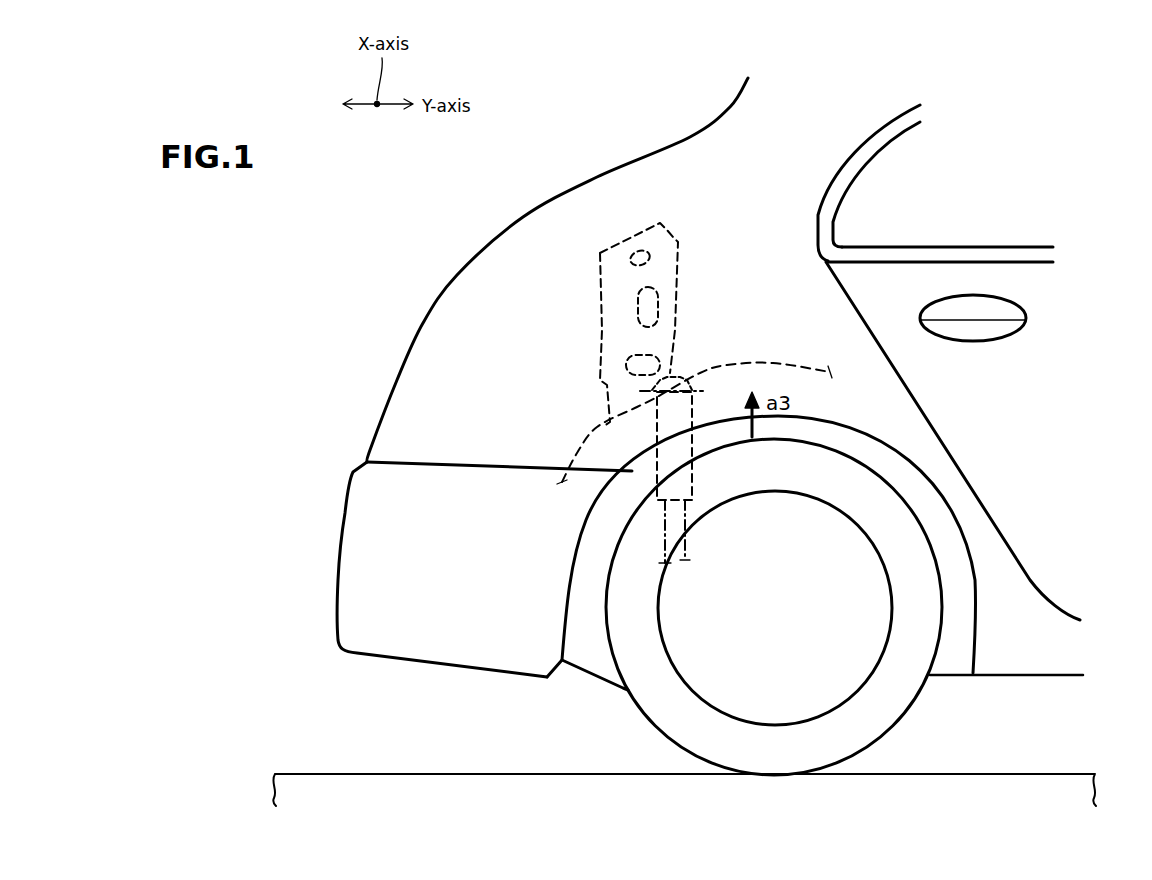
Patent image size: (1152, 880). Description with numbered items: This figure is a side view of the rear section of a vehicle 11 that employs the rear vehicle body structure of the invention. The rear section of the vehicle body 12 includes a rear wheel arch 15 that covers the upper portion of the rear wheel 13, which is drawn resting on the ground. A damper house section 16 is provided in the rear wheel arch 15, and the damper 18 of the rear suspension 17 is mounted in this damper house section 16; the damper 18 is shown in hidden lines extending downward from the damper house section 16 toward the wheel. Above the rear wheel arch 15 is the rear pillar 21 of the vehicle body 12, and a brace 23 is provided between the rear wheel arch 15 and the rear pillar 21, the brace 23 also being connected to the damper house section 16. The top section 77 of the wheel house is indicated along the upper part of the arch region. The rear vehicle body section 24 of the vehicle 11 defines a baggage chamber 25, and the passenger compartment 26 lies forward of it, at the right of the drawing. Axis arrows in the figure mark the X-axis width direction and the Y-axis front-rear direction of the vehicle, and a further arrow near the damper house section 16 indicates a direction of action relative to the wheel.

The vehicle 11 is at (998, 108).
The vehicle body 12 is at (1057, 584).
The rear wheel 13 is at (919, 724).
The rear wheel arch 15 is at (812, 352).
The damper house section 16 is at (702, 376).
The rear suspension 17 is at (632, 610).
The damper 18 is at (663, 522).
The rear pillar 21 is at (824, 114).
The brace 23 is at (590, 288).
The rear vehicle body section 24 is at (656, 96).
The baggage chamber 25 is at (449, 266).
The passenger compartment 26 is at (1094, 169).
The top section 77 is at (740, 365).